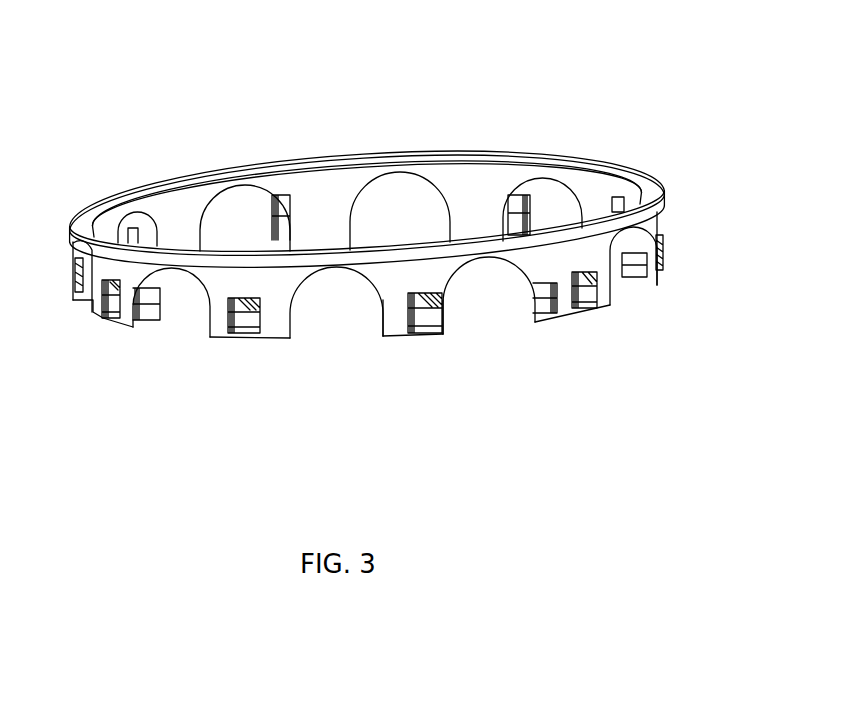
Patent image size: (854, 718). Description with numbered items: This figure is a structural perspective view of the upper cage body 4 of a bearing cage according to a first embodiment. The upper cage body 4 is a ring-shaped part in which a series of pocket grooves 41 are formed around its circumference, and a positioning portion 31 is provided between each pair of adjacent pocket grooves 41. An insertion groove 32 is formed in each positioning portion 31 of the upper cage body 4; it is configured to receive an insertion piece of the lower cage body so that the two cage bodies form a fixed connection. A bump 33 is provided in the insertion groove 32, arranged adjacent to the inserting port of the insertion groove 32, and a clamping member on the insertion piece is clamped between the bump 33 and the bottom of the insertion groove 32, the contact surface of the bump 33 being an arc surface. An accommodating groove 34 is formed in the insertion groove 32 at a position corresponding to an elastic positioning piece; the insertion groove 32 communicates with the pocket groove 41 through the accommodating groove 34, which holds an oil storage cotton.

The upper cage body 4 is at (405, 270).
The positioning portion 31 is at (397, 325).
The insertion groove 32 is at (427, 298).
The bump 33 is at (422, 318).
The accommodating groove 34 is at (557, 303).
The pocket groove 41 is at (510, 240).